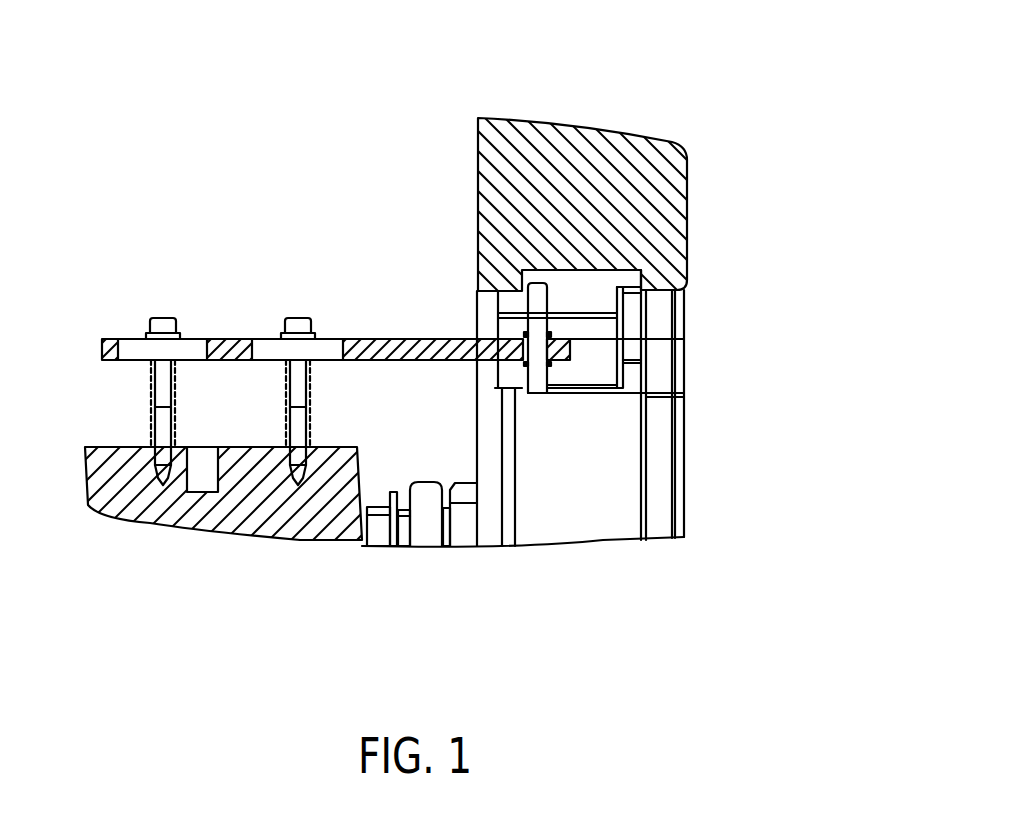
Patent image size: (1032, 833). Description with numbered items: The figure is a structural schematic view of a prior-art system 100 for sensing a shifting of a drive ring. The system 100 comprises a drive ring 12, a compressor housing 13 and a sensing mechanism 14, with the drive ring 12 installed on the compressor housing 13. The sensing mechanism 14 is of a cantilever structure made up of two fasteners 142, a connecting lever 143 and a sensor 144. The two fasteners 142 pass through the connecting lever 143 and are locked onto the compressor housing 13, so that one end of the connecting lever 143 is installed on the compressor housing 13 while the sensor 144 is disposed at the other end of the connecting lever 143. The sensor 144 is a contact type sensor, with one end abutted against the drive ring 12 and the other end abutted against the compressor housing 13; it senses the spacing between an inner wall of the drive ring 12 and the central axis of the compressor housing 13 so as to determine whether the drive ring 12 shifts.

The system for sensing a shifting of a drive ring 100 is at (132, 105).
The drive ring 12 is at (623, 167).
The compressor housing 13 is at (230, 518).
The sensing mechanism 14 is at (397, 224).
The fasteners 142 is at (163, 378).
The connecting lever 143 is at (237, 353).
The sensor 144 is at (535, 323).